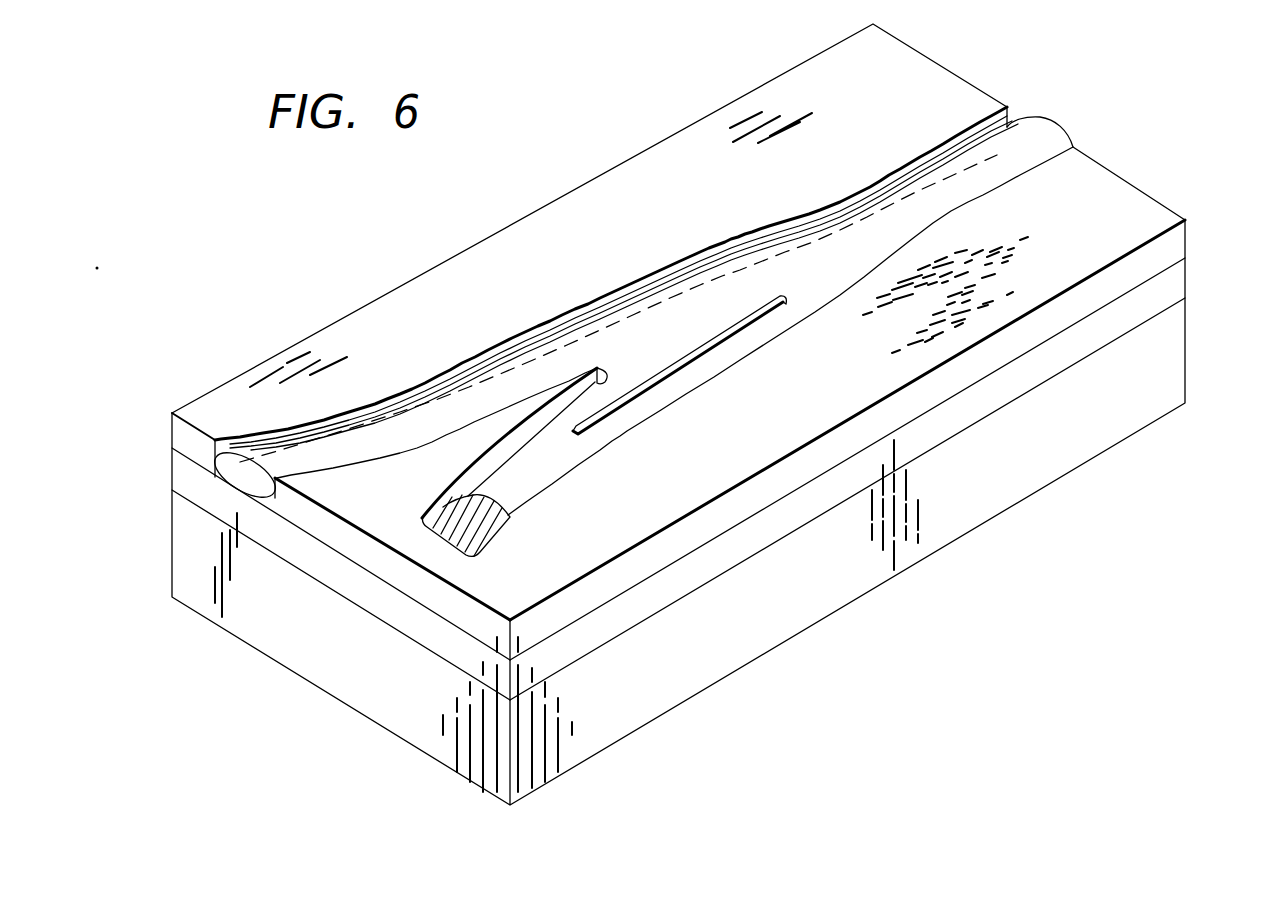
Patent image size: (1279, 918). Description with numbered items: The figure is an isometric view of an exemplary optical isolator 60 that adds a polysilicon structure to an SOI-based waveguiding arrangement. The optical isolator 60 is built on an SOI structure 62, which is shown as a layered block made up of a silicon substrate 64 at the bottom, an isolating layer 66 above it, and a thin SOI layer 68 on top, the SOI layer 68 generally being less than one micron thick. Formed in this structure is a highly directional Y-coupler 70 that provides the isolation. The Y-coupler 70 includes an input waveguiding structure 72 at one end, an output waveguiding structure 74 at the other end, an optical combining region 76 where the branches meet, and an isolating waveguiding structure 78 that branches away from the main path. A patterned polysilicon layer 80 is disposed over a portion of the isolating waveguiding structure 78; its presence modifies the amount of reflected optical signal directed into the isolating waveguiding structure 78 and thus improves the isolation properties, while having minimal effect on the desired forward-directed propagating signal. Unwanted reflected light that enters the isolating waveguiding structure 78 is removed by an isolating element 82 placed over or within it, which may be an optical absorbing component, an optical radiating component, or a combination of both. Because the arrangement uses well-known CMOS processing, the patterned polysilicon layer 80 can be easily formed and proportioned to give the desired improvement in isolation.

The optical isolator 60 is at (1111, 100).
The SOI structure 62 is at (1213, 218).
The silicon substrate 64 is at (184, 552).
The isolating layer 66 is at (186, 477).
The SOI layer 68 is at (218, 458).
The highly directional Y-coupler 70 is at (675, 327).
The input waveguiding structure 72 is at (462, 405).
The output waveguiding structure 74 is at (905, 213).
The optical combining region 76 is at (641, 335).
The isolating waveguiding structure 78 is at (639, 313).
The patterned polysilicon layer 80 is at (663, 388).
The isolating element 82 is at (488, 521).